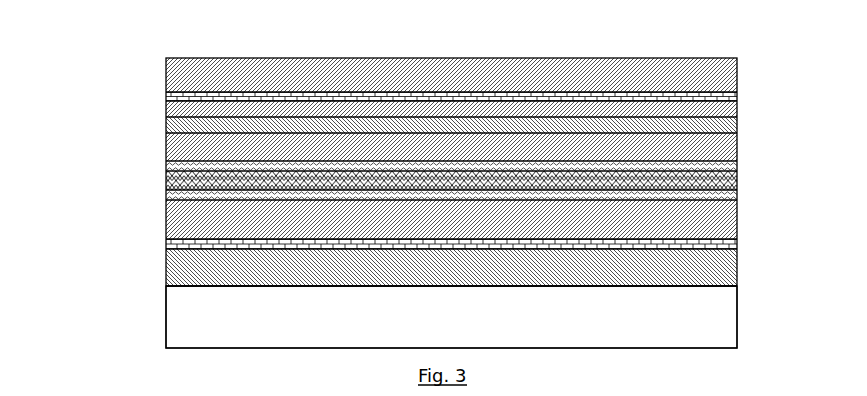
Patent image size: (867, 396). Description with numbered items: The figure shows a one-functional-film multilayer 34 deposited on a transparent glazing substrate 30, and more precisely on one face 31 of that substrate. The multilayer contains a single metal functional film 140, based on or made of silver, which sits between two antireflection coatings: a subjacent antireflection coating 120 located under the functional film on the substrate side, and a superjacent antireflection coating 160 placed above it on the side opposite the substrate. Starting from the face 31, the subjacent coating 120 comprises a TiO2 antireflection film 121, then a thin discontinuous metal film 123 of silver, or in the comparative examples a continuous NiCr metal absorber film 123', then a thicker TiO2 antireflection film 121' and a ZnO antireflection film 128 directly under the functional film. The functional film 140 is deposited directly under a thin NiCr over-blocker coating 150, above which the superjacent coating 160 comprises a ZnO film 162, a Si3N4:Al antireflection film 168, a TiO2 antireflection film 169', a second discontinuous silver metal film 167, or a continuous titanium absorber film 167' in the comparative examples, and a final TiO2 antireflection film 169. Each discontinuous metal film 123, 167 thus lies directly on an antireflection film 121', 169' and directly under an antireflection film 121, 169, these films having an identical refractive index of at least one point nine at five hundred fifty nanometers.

The one-functional-film multilayer 34 is at (248, 45).
The superjacent antireflection coating 160 is at (406, 109).
The antireflection film 169 is at (387, 75).
The discontinuous metal film 167 is at (386, 95).
The metal absorber film 167' is at (386, 95).
The antireflection film 169' is at (375, 116).
The antireflection film 168 is at (184, 119).
The ZnO film 162 is at (183, 145).
The over-blocker coating 150 is at (195, 168).
The metal functional film 140 is at (718, 184).
The antireflection film 128 is at (185, 195).
The subjacent antireflection coating 120 is at (415, 239).
The antireflection film 121 is at (413, 219).
The discontinuous metal film 123 is at (381, 241).
The metal absorber film 123' is at (381, 241).
The antireflection film 121' is at (405, 267).
The transparent glazing substrate 30 is at (462, 314).
The face of the substrate 31 is at (703, 286).